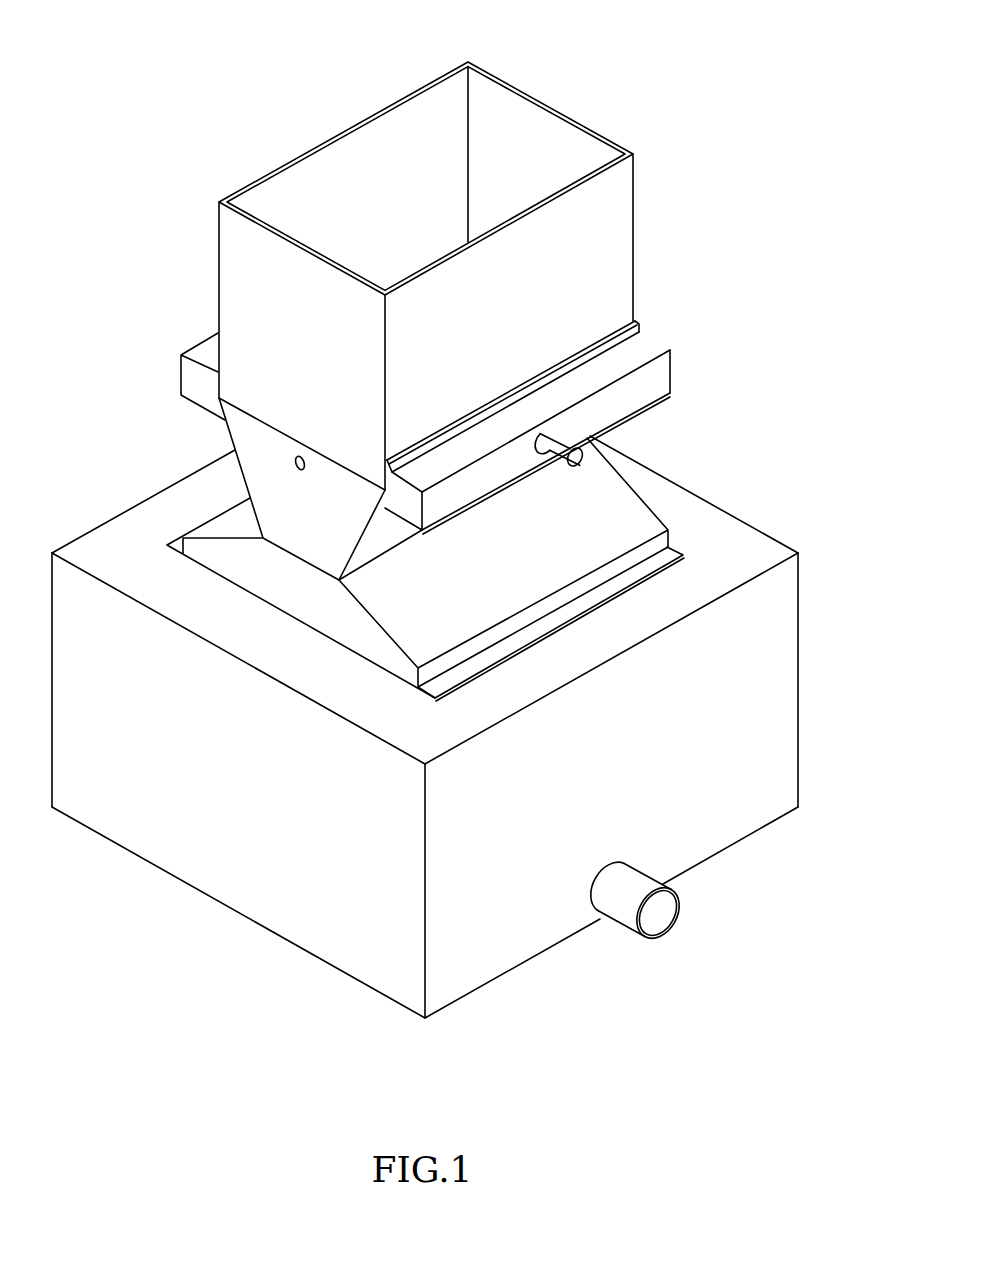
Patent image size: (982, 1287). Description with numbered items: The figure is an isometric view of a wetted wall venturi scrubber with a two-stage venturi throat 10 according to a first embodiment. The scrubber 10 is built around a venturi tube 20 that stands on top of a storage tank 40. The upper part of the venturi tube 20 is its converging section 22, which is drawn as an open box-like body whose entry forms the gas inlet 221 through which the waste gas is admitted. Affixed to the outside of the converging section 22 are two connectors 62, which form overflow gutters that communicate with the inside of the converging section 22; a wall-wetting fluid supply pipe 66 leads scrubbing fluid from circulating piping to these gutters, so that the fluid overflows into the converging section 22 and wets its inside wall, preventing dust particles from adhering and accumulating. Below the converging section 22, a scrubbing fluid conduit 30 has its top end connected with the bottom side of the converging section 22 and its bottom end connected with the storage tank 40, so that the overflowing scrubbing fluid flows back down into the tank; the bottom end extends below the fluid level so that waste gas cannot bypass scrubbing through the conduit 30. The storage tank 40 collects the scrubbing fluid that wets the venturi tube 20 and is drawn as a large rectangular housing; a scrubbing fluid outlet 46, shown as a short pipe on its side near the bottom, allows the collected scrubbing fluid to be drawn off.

The wetted wall venturi scrubber with a 2-stage venturi throat 10 is at (239, 120).
The venturi tube 20 is at (662, 449).
The gas inlet 221 is at (548, 147).
The converging section 22 is at (256, 461).
The connector 62 is at (196, 380).
The wall-wetting fluid supply pipe 66 is at (592, 447).
The scrubbing fluid conduit 30 is at (662, 547).
The storage tank 40 is at (237, 870).
The scrubbing fluid outlet 46 is at (658, 917).